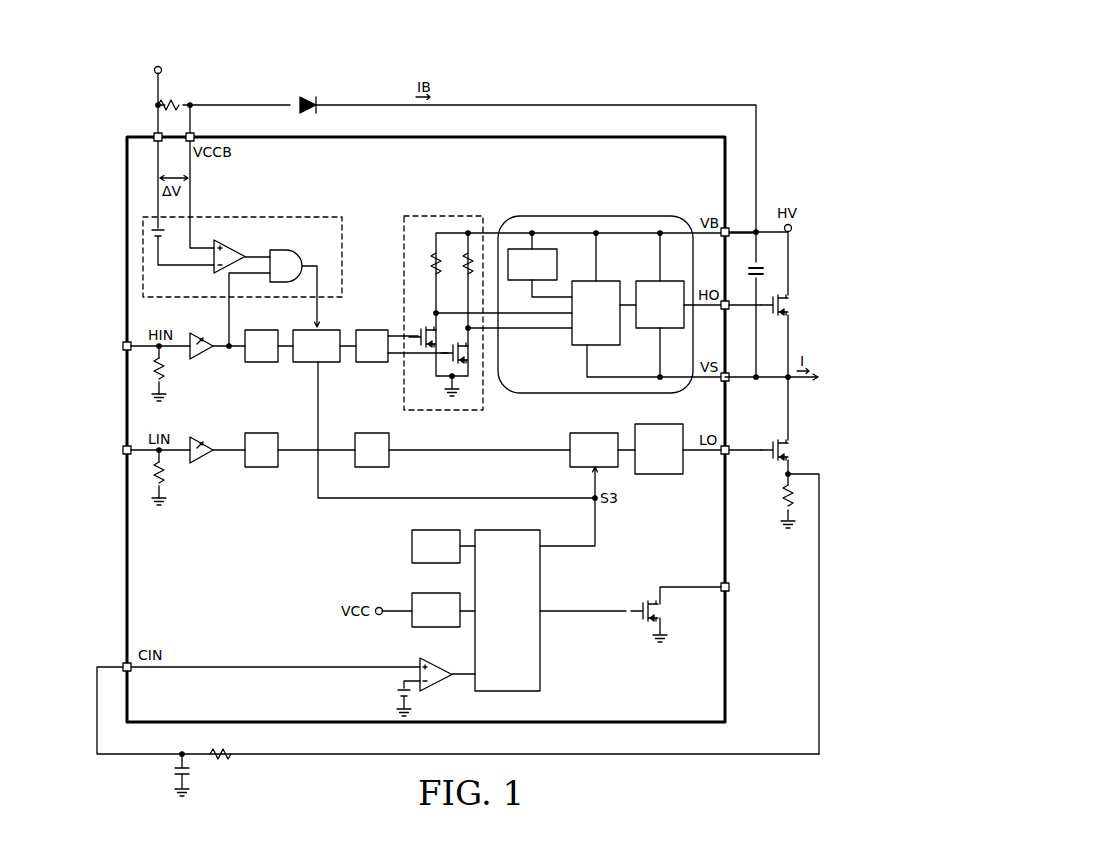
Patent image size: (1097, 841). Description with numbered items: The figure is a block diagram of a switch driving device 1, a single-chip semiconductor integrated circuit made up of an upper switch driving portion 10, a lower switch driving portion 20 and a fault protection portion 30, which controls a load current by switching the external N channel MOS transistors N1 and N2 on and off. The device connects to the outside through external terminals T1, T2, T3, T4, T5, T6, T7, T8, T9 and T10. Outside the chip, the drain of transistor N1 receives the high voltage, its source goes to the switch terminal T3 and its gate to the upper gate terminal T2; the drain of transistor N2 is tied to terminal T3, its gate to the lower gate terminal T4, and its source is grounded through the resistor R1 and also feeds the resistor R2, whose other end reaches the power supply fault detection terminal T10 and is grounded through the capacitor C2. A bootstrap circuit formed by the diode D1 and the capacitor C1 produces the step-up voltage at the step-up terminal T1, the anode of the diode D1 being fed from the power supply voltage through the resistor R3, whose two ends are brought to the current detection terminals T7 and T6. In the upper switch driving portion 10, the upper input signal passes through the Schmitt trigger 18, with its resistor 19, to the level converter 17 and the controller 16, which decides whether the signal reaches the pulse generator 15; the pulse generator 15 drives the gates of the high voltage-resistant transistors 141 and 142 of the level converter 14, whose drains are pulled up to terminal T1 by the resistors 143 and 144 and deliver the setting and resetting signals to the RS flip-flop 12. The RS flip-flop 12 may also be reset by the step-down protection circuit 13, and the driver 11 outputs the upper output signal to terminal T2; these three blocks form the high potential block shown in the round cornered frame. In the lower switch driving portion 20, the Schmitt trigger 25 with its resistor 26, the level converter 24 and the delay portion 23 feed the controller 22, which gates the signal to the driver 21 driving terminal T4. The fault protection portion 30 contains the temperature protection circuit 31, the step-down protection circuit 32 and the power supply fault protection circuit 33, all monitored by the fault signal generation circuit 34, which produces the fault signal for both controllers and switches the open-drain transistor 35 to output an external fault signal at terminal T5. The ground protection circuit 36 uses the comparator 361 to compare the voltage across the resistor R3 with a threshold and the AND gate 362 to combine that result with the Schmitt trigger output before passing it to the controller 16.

The switch driving device 1 is at (429, 137).
The upper switch driving portion 10 is at (603, 208).
The driver 11 is at (673, 281).
The RS flip-flop 12 is at (609, 281).
The step-down protection circuit 13 is at (549, 264).
The level converter 14 is at (444, 216).
The transistor 141 is at (464, 375).
The transistor 142 is at (429, 362).
The resistor 143 is at (466, 282).
The resistor 144 is at (431, 282).
The pulse generator 15 is at (373, 330).
The controller 16 is at (326, 330).
The level converter 17 is at (263, 330).
The Schmitt trigger 18 is at (200, 336).
The resistor 19 is at (177, 373).
The lower switch driving portion 20 is at (666, 505).
The driver 21 is at (662, 424).
The controller 22 is at (600, 433).
The delay portion 23 is at (373, 433).
The level converter 24 is at (263, 433).
The Schmitt trigger 25 is at (200, 440).
The resistor 26 is at (177, 477).
The fault protection portion 30 is at (601, 674).
The temperature protection circuit 31 is at (434, 530).
The step-down protection circuit 32 is at (434, 593).
The power supply fault protection circuit 33 is at (437, 660).
The fault signal generation circuit 34 is at (504, 530).
The transistor 35 is at (676, 614).
The ground protection circuit 36 is at (238, 217).
The comparator 361 is at (240, 236).
The AND gate 362 is at (288, 244).
The step-up terminal T1 is at (731, 229).
The upper gate terminal T2 is at (731, 302).
The switch terminal T3 is at (731, 374).
The lower gate terminal T4 is at (731, 447).
The external terminal T5 is at (731, 584).
The current detection terminal (−) T6 is at (198, 134).
The current detection terminal (+) T7 is at (154, 134).
The external terminal T8 is at (116, 345).
The external terminal T9 is at (116, 449).
The power supply fault detection terminal T10 is at (122, 663).
The resistor R1 is at (775, 506).
The resistor R2 is at (220, 745).
The resistor R3 is at (449, 140).
The capacitor C1 is at (767, 271).
The capacitor C2 is at (168, 775).
The diode D1 is at (307, 95).
The transistor N1 is at (796, 305).
The transistor N2 is at (796, 450).